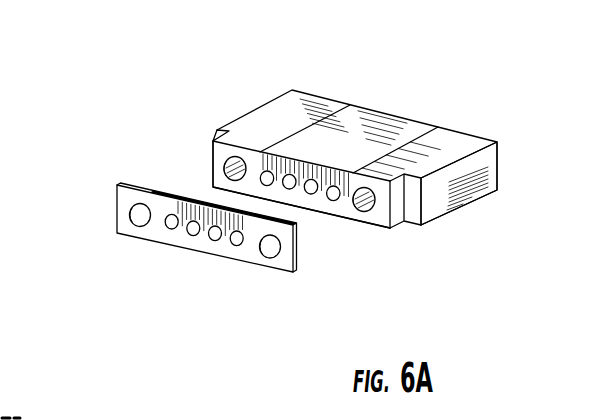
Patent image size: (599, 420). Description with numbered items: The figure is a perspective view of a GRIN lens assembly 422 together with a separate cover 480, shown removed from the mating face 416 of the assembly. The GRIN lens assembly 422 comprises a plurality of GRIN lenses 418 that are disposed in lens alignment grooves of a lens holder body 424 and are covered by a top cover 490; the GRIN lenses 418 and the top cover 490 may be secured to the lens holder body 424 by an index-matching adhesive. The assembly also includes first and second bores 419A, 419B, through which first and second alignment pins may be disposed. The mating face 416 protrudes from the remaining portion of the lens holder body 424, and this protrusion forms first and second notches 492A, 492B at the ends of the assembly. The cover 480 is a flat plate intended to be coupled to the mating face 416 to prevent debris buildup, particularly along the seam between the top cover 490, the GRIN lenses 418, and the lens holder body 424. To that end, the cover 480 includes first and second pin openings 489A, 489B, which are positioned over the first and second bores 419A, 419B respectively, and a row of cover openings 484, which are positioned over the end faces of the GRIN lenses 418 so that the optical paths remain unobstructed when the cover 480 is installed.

The GRIN lens assembly 422 is at (245, 70).
The top cover 490 is at (366, 112).
The first notch 492A is at (215, 129).
The second notch 492B is at (411, 218).
The lens holder body 424 is at (465, 202).
The mating face 416 is at (237, 192).
The first bore 419A is at (226, 169).
The second bore 419B is at (361, 213).
The GRIN lenses 418 is at (330, 243).
The cover 480 is at (245, 266).
The cover openings 484 is at (195, 283).
The first pin opening 489A is at (130, 210).
The second pin opening 489B is at (281, 248).